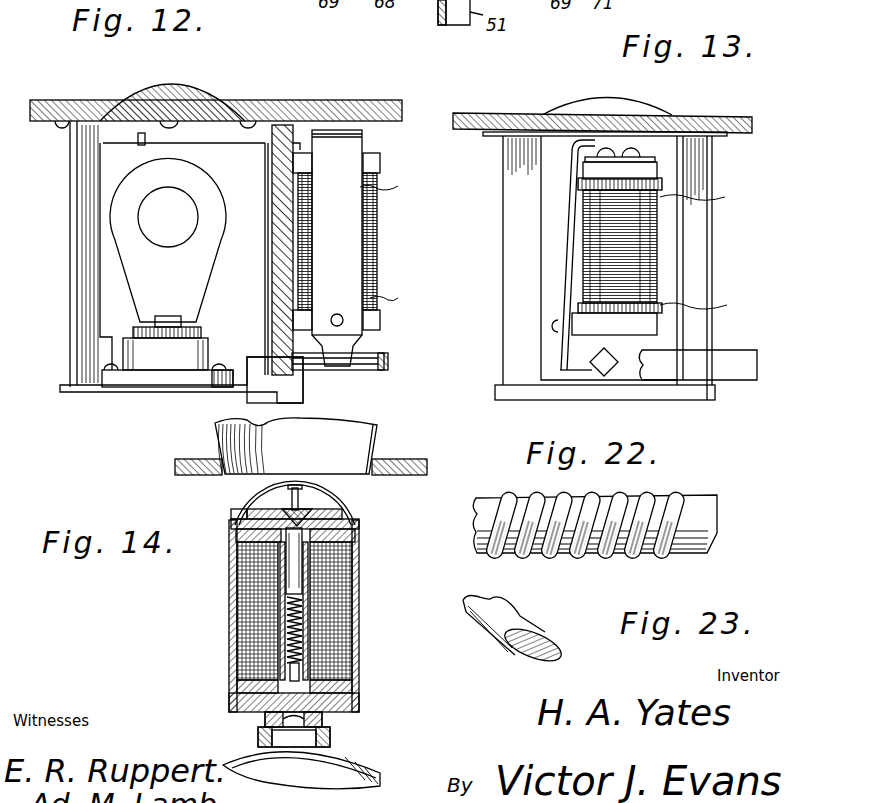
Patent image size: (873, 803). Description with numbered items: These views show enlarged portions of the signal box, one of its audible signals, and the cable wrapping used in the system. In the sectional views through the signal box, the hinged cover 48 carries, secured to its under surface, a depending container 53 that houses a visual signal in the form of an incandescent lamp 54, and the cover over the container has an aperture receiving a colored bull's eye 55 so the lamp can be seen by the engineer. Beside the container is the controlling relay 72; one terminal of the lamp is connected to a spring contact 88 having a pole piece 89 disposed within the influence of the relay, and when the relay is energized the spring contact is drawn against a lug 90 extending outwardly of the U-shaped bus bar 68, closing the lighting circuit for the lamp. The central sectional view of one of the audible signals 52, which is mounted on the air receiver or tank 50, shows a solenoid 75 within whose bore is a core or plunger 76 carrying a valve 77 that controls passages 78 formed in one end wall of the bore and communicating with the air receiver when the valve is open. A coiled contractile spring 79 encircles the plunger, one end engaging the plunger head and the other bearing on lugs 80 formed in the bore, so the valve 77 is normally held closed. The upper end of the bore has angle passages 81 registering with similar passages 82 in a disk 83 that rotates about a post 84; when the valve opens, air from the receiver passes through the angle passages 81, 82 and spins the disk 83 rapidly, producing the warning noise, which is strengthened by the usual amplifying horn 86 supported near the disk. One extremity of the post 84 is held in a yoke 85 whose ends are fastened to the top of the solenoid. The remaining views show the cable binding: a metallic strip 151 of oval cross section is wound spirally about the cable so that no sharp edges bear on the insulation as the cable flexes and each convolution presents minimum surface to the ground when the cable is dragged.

In FIG. 12, the hinged cover 48 is at (331, 103).
In FIG. 13, the hinged cover 48 is at (511, 118).
In FIG. 14, the hinged cover 48 is at (190, 460).
In FIG. 14, the air receiver or tank 50 is at (332, 781).
In FIG. 14, the audible signal 52 is at (229, 599).
In FIG. 12, the container 53 is at (70, 234).
In FIG. 13, the container 53 is at (506, 254).
In FIG. 12, the incandescent lamp 54 is at (128, 270).
In FIG. 12, the bull's eye 55 is at (211, 84).
In FIG. 13, the bull's eye 55 is at (606, 100).
In FIG. 12, the bus bar 68 is at (393, 367).
In FIG. 13, the bus bar 68 is at (745, 368).
In FIG. 12, the controlling relay 72 is at (372, 253).
In FIG. 13, the controlling relay 72 is at (655, 250).
In FIG. 14, the solenoid 75 is at (361, 590).
In FIG. 14, the core or plunger 76 is at (343, 611).
In FIG. 14, the valve 77 is at (325, 722).
In FIG. 14, the passages 78 is at (265, 716).
In FIG. 14, the coiled contractile spring 79 is at (353, 630).
In FIG. 14, the lugs 80 is at (236, 663).
In FIG. 14, the angle passages 81 is at (362, 525).
In FIG. 14, the passages 82 is at (322, 512).
In FIG. 14, the disk 83 is at (266, 508).
In FIG. 14, the post 84 is at (302, 499).
In FIG. 14, the yoke 85 is at (238, 500).
In FIG. 14, the amplifying horn 86 is at (362, 452).
In FIG. 12, the spring contact 88 is at (348, 215).
In FIG. 13, the spring contact 88 is at (565, 302).
In FIG. 12, the pole piece 89 is at (383, 322).
In FIG. 13, the pole piece 89 is at (648, 326).
In FIG. 12, the lug 90 is at (366, 372).
In FIG. 13, the lug 90 is at (602, 372).
In FIG. 22, the metallic strip 151 is at (668, 522).
In FIG. 23, the metallic strip 151 is at (522, 621).